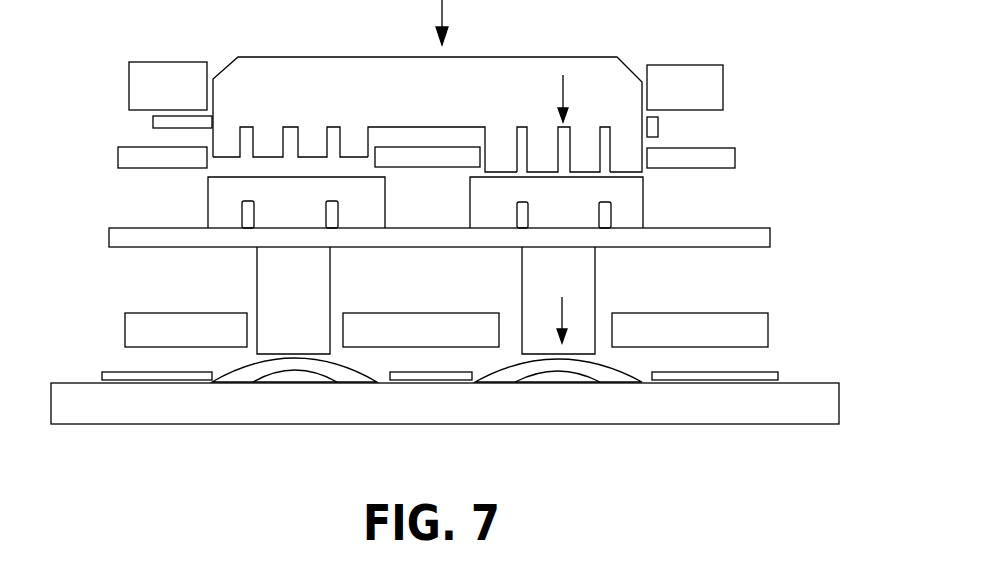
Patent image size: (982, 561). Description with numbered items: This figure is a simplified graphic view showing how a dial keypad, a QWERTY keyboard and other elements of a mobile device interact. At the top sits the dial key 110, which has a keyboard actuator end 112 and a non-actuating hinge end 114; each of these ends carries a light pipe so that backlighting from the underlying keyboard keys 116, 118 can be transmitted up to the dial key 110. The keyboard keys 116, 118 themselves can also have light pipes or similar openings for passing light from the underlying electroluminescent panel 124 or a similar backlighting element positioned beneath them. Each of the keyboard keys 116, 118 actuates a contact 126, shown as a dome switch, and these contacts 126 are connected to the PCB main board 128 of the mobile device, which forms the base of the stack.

The dial key 110 is at (309, 88).
The keyboard actuator end 112 is at (625, 162).
The non-actuating hinge end 114 is at (227, 145).
The keyboard key 116 is at (228, 219).
The keyboard key 118 is at (624, 217).
The electroluminescent (EL) panel 124 is at (133, 333).
The contact 126 is at (352, 382).
The PCB main board 128 is at (198, 410).